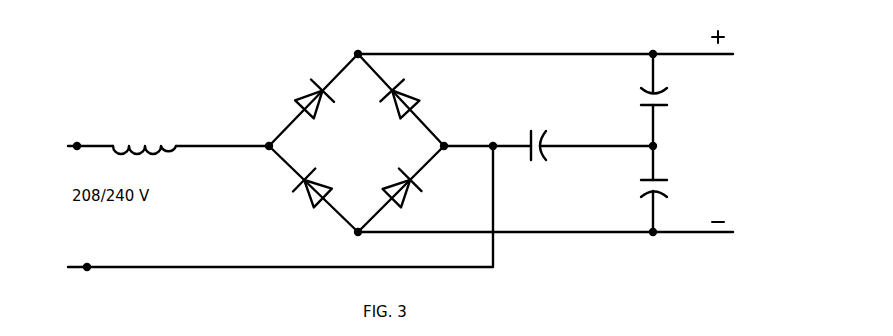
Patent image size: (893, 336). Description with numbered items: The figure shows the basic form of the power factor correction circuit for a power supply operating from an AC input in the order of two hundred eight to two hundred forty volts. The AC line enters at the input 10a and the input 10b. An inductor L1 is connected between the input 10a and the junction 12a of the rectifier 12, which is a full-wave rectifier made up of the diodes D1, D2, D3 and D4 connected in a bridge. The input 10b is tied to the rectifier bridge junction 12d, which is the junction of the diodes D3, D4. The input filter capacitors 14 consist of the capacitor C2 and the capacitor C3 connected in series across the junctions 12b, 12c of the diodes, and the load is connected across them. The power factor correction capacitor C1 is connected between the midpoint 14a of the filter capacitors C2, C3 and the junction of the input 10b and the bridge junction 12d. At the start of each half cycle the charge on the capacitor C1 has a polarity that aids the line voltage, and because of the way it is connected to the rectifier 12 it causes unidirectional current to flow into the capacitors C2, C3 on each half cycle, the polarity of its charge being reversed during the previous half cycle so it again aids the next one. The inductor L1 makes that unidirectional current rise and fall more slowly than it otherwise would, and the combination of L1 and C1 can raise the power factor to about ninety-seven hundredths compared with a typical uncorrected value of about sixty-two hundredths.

The input 10a is at (90, 137).
The input 10b is at (280, 208).
The inductor L1 is at (144, 136).
The rectifier 12 is at (356, 143).
The junction 12a is at (268, 149).
The junction 12b is at (357, 55).
The junction 12c is at (357, 234).
The rectifier bridge junction 12d is at (446, 144).
The diode D1 is at (308, 94).
The diode D2 is at (307, 197).
The diode D3 is at (411, 97).
The diode D4 is at (412, 194).
The power factor correction capacitor C1 is at (589, 134).
The capacitor C2 is at (669, 98).
The capacitor C3 is at (671, 186).
The input filter capacitors 14 is at (704, 133).
The midpoint 14a is at (655, 146).